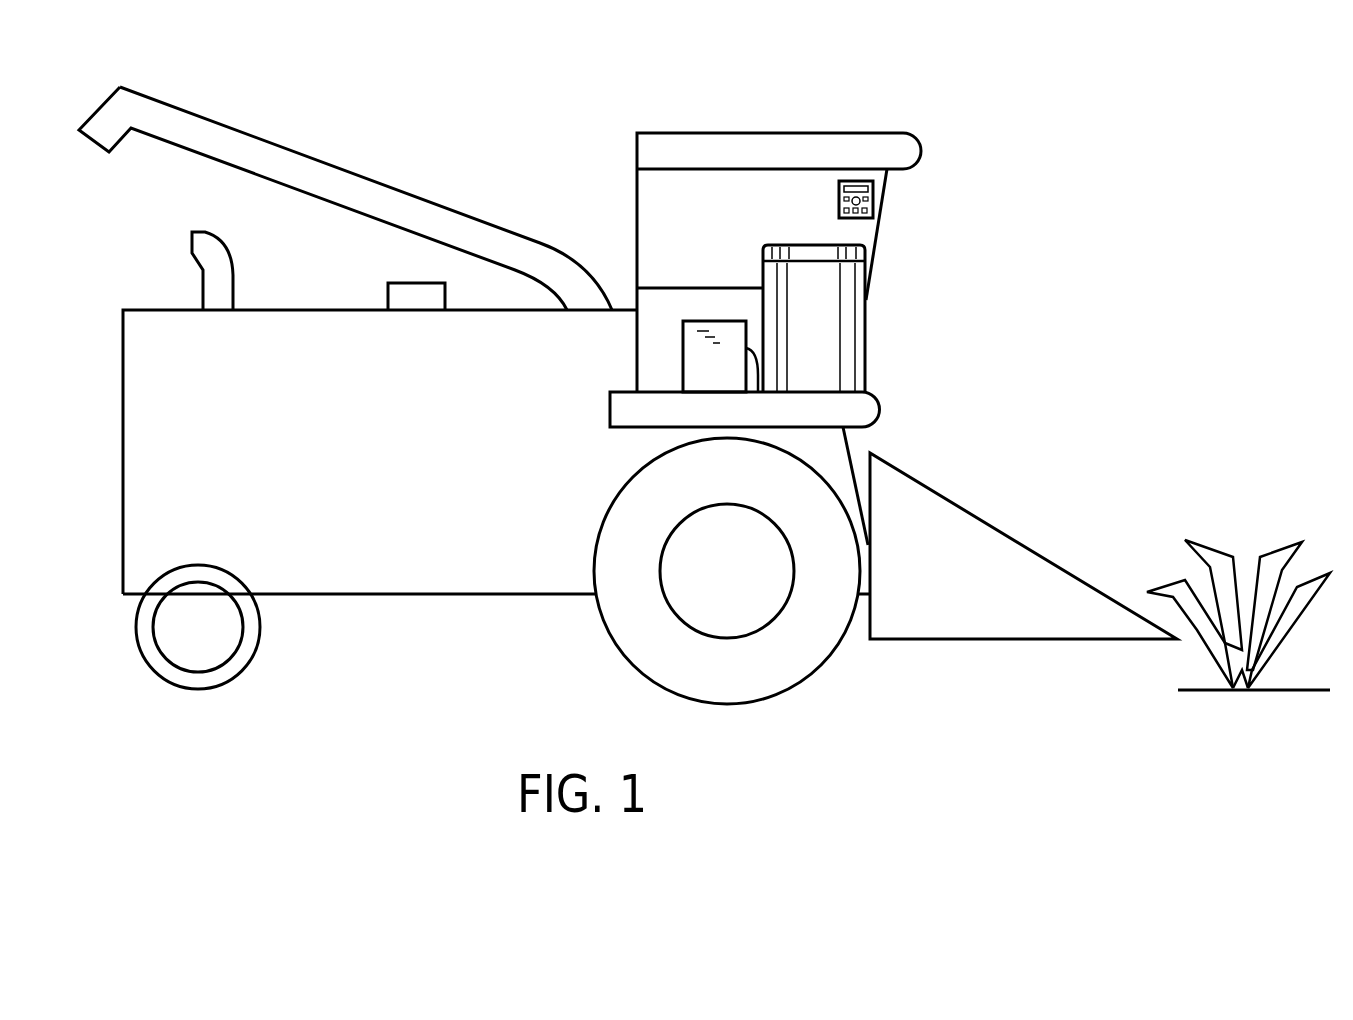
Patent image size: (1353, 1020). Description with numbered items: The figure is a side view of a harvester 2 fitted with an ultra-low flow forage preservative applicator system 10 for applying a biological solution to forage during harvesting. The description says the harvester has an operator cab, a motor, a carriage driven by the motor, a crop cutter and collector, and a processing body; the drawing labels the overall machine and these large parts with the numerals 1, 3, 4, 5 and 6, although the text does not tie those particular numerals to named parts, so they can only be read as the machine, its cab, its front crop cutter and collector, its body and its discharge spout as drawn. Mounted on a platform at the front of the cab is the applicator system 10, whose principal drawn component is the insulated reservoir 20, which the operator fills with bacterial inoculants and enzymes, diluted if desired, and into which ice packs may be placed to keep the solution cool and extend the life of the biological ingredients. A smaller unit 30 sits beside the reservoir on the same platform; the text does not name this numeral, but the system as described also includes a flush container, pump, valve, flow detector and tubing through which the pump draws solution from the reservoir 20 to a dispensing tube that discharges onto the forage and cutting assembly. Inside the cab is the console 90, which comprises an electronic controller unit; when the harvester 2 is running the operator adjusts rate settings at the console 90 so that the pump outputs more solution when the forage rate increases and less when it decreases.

The harvesting machine (forage harvester) 1 is at (1006, 166).
The harvester 2 is at (636, 138).
The cab window 3 is at (698, 225).
The header / front attachment 4 is at (964, 577).
The machine body / chassis 5 is at (457, 456).
The discharge spout 6 is at (377, 190).
The forage preservative applicator system 10 is at (866, 375).
The reservoir 20 is at (799, 311).
The control box 30 is at (700, 385).
The console 90 is at (873, 205).